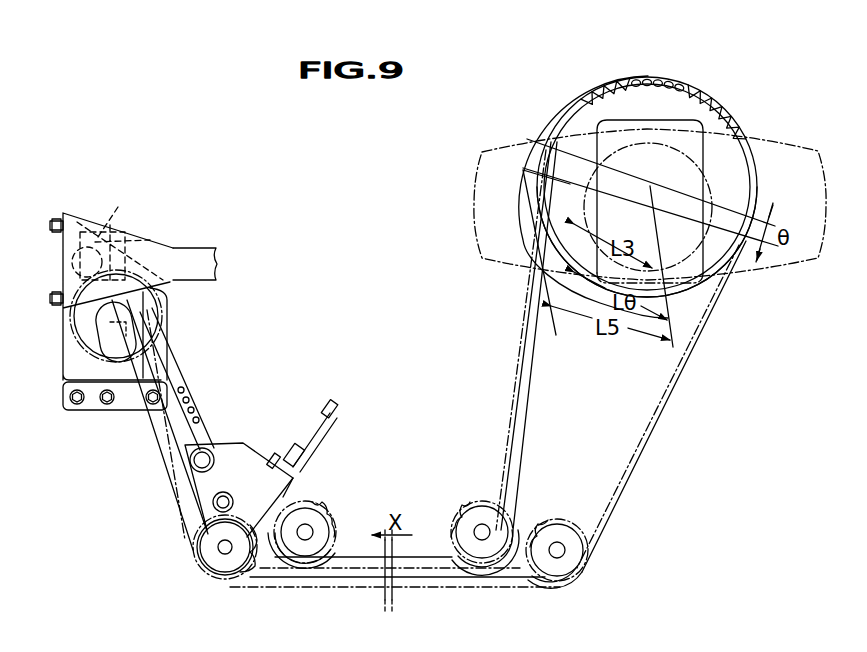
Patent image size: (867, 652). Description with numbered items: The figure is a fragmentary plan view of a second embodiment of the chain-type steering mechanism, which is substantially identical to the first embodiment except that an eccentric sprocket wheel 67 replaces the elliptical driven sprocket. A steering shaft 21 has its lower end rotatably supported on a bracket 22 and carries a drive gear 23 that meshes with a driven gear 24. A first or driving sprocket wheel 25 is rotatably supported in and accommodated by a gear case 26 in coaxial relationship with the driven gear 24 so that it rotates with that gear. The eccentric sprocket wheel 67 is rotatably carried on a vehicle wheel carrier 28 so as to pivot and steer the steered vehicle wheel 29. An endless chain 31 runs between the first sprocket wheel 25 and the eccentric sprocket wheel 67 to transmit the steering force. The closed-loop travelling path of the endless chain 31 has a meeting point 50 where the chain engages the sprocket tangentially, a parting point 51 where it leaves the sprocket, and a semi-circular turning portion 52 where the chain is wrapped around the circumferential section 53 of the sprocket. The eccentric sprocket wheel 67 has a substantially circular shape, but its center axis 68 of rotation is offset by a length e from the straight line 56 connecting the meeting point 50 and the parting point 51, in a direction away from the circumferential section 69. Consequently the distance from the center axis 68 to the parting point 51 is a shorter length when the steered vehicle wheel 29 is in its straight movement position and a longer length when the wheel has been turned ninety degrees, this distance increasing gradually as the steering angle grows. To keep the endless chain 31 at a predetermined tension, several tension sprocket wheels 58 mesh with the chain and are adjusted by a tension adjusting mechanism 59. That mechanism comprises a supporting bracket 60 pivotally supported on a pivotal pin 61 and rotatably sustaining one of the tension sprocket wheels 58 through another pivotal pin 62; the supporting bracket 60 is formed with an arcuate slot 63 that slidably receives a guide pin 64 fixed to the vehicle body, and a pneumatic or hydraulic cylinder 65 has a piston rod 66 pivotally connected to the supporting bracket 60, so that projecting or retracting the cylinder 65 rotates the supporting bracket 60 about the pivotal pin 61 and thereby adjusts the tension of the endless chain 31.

The steering shaft 21 is at (200, 250).
The bracket 22 is at (149, 242).
The drive gear 23 is at (111, 213).
The driven gear 24 is at (92, 334).
The first sprocket wheel 25 is at (130, 318).
The gear case 26 is at (91, 384).
The vehicle wheel carrier 28 is at (559, 240).
The steered vehicle wheel 29 is at (486, 262).
The endless chain 31 is at (640, 449).
The meeting point 50 is at (758, 207).
The parting point 51 is at (541, 141).
The semi-circular turning portion 52 is at (672, 78).
The circumferential section 53 is at (648, 77).
The straight line 56 is at (706, 205).
The tension sprocket wheels 58 is at (258, 570).
The tension adjusting mechanism 59 is at (269, 432).
The supporting bracket 60 is at (197, 486).
The pivotal pin 61 is at (197, 453).
The pivotal pin 62 is at (221, 553).
The arcuate slot 63 is at (233, 500).
The guide pin 64 is at (205, 527).
The cylinder 65 is at (330, 418).
The piston rod 66 is at (295, 480).
The eccentric sprocket wheel 67 is at (575, 96).
The center axis 68 is at (648, 207).
The circumferential section 69 is at (697, 92).